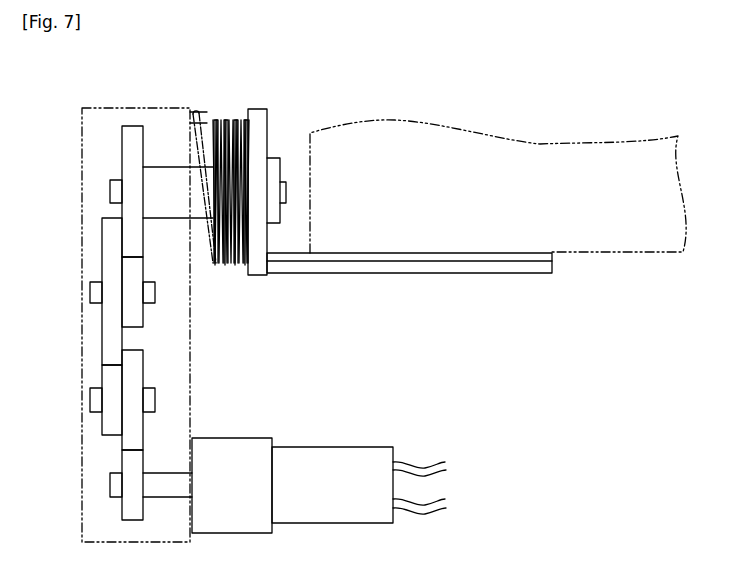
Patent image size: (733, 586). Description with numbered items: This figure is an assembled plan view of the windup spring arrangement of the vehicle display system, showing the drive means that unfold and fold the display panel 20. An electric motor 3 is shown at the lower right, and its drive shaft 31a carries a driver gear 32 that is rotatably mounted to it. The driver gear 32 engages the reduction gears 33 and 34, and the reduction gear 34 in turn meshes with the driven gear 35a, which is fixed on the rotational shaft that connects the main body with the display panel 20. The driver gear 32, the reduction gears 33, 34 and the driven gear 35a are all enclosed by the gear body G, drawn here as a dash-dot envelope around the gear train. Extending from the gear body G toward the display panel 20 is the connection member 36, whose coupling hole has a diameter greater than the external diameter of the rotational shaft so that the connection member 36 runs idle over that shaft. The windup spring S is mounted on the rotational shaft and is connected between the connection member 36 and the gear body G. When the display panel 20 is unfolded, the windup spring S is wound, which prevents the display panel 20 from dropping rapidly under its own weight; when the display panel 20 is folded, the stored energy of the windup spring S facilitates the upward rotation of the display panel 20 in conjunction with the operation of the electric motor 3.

The gear body G is at (126, 98).
The windup spring S is at (217, 112).
The display panel 20 is at (537, 142).
The driven gear 35a is at (122, 160).
The reduction gear 34 is at (102, 262).
The reduction gear 33 is at (102, 377).
The driver gear 32 is at (122, 466).
The drive shaft 31a is at (160, 498).
The motor 3 is at (305, 447).
The connection member 36 is at (353, 275).